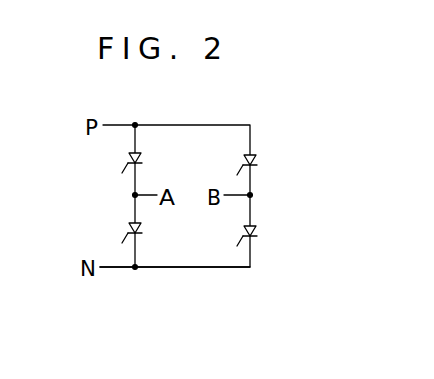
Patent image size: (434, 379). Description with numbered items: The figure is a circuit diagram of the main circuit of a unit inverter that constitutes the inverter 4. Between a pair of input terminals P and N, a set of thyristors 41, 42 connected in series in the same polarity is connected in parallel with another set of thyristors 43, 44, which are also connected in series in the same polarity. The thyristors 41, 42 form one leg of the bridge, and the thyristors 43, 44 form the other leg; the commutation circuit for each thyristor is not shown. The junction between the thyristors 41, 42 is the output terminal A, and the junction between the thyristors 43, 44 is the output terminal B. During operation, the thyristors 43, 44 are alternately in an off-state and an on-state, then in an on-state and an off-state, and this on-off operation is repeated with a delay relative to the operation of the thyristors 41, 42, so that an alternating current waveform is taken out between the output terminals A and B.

The inverter 4 is at (212, 267).
The thyristor 41 is at (141, 158).
The thyristor 42 is at (141, 228).
The thyristor 43 is at (256, 160).
The thyristor 44 is at (244, 230).